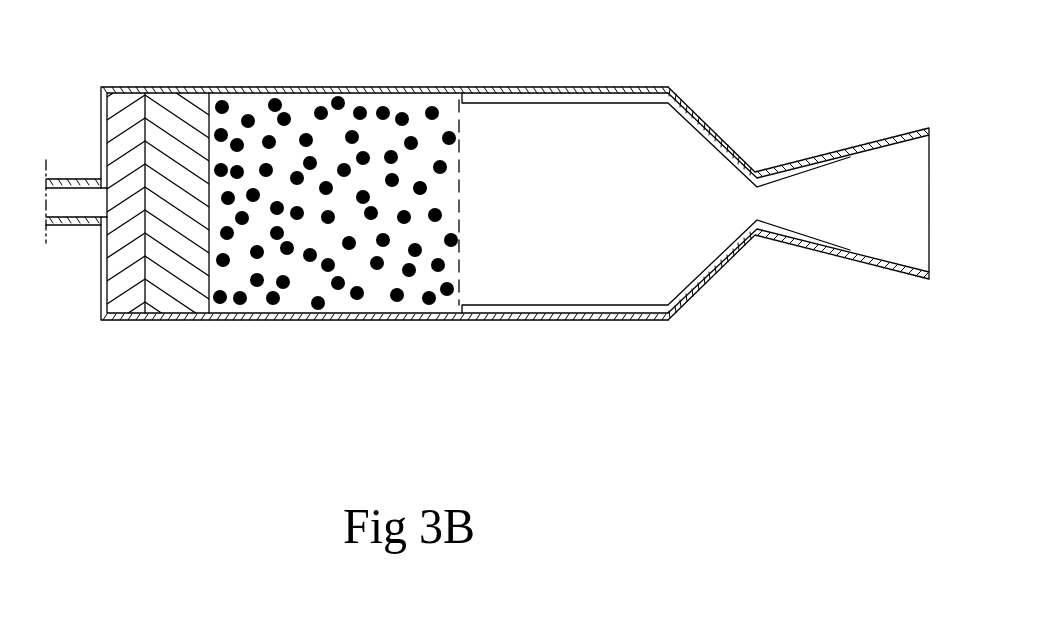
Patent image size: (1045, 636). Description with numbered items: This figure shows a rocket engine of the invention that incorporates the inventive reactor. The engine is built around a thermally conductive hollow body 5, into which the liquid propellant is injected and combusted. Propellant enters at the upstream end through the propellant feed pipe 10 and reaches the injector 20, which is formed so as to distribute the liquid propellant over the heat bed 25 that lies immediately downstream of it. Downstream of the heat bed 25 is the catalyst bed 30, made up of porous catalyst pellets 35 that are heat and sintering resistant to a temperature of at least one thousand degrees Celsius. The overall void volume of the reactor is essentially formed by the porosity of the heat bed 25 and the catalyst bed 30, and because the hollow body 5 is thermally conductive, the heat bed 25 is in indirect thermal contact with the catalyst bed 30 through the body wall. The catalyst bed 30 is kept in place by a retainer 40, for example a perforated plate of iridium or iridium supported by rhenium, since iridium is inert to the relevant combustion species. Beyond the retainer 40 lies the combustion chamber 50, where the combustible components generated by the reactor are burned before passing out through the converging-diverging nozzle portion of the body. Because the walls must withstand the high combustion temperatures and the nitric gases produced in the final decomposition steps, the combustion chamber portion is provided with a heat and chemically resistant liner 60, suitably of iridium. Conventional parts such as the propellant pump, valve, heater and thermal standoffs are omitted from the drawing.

The hollow body 5 is at (322, 322).
The propellant feed pipe 10 is at (78, 213).
The injector 20 is at (122, 102).
The heat bed 25 is at (182, 298).
The catalyst bed 30 is at (413, 107).
The catalyst pellets 35 is at (272, 100).
The retainer 40 is at (462, 245).
The combustion chamber 50 is at (583, 118).
The heat and chemically resistant liner 60 is at (655, 308).